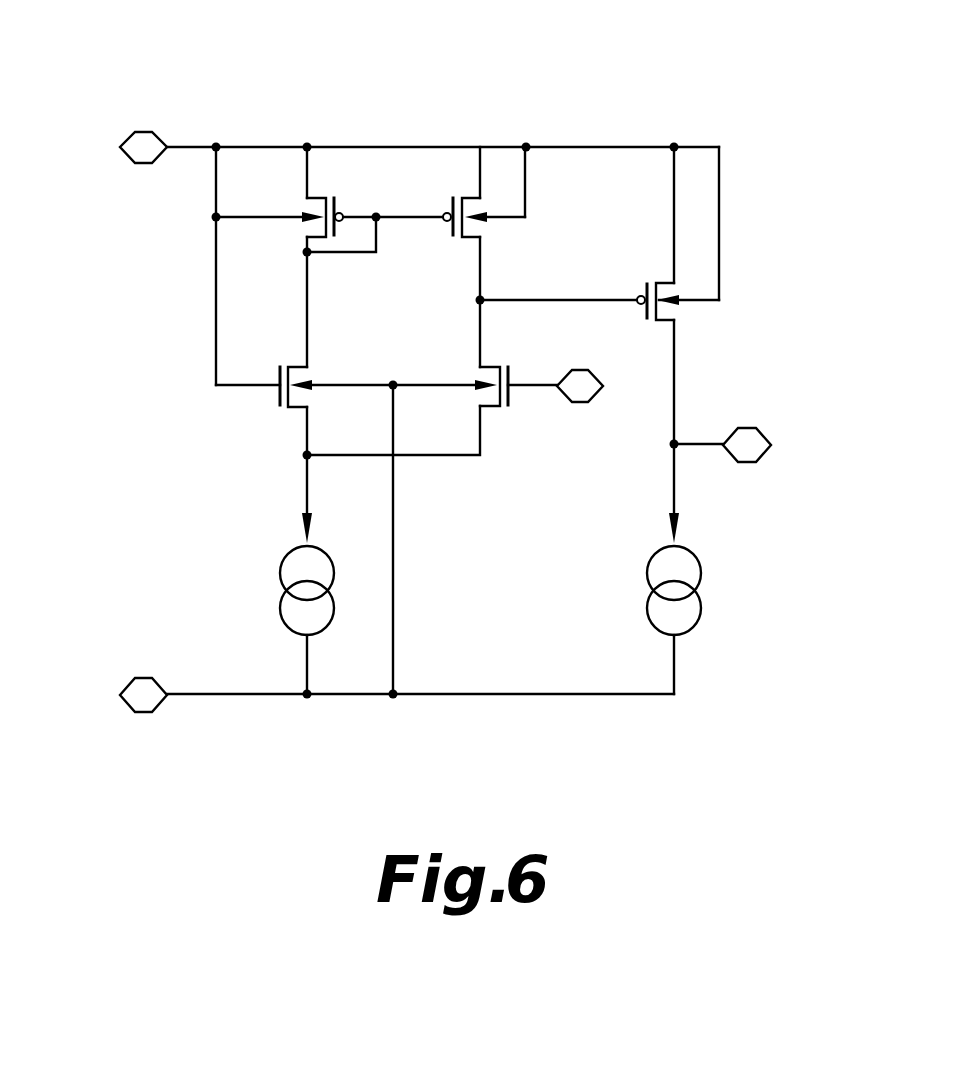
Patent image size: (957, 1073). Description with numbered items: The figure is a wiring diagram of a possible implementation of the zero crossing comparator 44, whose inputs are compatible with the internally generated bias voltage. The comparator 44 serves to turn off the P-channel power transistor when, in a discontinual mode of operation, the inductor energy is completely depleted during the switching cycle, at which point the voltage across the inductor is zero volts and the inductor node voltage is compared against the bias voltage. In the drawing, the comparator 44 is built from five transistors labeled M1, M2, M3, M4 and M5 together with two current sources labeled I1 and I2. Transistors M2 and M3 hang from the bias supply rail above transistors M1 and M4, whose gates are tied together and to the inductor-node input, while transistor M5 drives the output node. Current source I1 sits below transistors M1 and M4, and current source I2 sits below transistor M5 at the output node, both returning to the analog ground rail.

The zero crossing comparator 44 is at (767, 57).
The transistor M1 is at (285, 368).
The transistor M2 is at (324, 199).
The transistor M3 is at (460, 199).
The transistor M4 is at (501, 368).
The transistor M5 is at (653, 283).
The current source I1 is at (291, 590).
The current source I2 is at (657, 590).